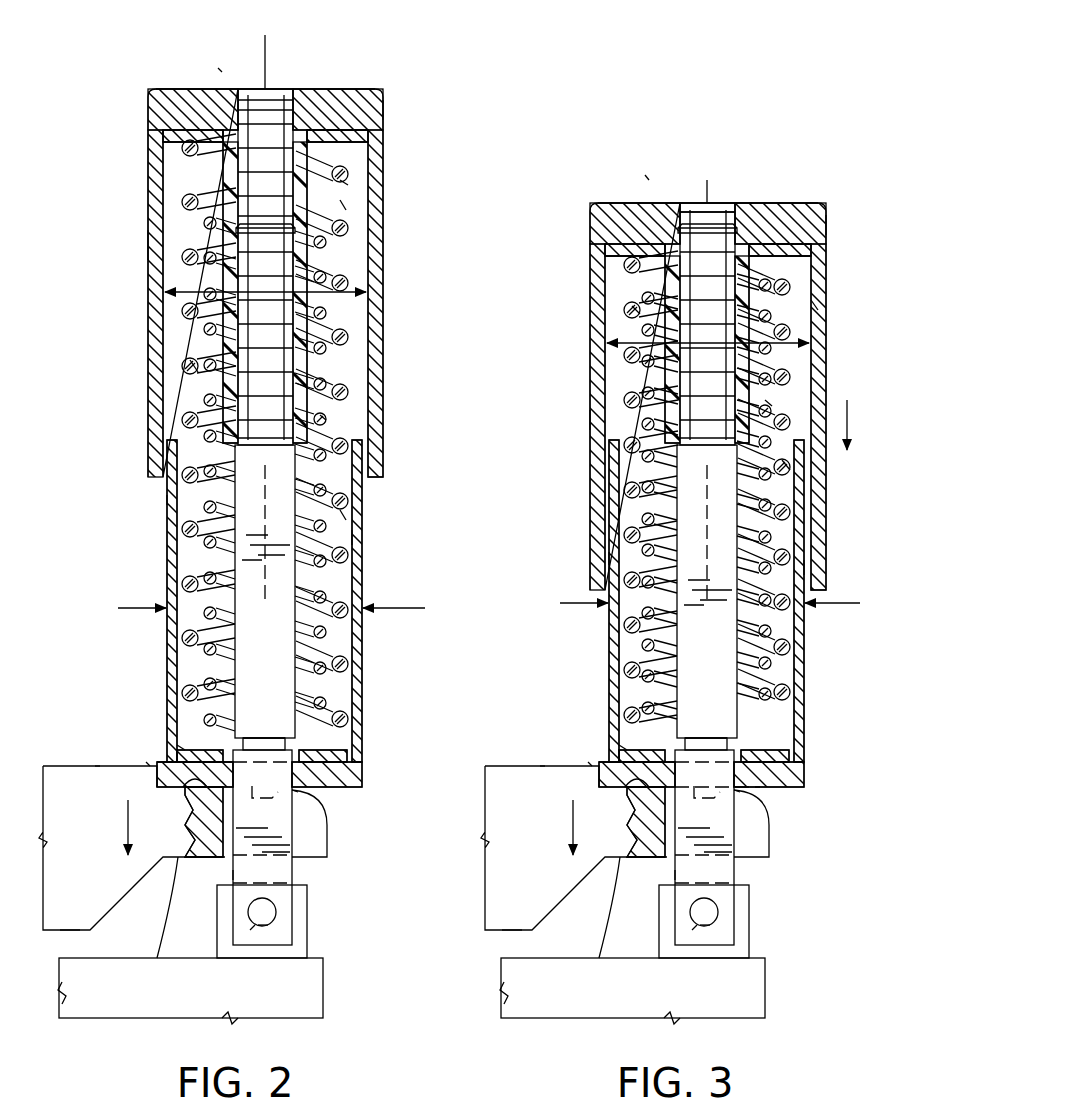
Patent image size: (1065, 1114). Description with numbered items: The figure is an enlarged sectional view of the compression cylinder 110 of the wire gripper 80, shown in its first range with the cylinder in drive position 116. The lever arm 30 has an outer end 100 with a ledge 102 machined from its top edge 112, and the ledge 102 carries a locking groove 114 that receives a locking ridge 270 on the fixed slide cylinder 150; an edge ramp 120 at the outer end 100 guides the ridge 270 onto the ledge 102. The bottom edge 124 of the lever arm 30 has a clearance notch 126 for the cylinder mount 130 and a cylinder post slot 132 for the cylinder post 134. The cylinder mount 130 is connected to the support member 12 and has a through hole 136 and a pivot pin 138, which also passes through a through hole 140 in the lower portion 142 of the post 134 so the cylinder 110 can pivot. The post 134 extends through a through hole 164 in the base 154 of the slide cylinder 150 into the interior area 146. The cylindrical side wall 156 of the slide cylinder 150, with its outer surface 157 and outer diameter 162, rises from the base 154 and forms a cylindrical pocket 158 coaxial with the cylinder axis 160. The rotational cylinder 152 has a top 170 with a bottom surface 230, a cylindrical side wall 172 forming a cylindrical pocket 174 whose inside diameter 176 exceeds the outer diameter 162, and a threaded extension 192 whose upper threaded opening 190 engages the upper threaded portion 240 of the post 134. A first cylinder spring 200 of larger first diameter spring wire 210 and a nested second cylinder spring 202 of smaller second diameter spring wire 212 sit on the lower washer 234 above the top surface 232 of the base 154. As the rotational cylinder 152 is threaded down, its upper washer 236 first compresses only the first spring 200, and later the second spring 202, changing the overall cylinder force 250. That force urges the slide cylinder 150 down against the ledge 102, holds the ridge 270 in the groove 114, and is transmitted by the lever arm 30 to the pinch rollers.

In FIG. 2, the support member 12 is at (308, 986).
In FIG. 3, the support member 12 is at (752, 986).
In FIG. 2, the lever arm 30 is at (62, 764).
In FIG. 3, the lever arm 30 is at (518, 762).
In FIG. 2, the wire gripper 80 is at (90, 613).
In FIG. 3, the wire gripper 80 is at (555, 665).
In FIG. 2, the outer end 100 is at (146, 759).
In FIG. 3, the outer end 100 is at (588, 759).
In FIG. 2, the ledge 102 is at (195, 783).
In FIG. 3, the ledge 102 is at (640, 783).
In FIG. 2, the compression cylinder 110 is at (397, 103).
In FIG. 3, the compression cylinder 110 is at (840, 195).
In FIG. 2, the top edge 112 is at (95, 764).
In FIG. 3, the top edge 112 is at (547, 764).
In FIG. 2, the locking groove 114 is at (257, 773).
In FIG. 3, the locking groove 114 is at (706, 773).
In FIG. 2, the drive position 116 is at (218, 68).
In FIG. 3, the drive position 116 is at (645, 175).
In FIG. 2, the edge ramp 120 is at (298, 792).
In FIG. 3, the edge ramp 120 is at (740, 792).
In FIG. 2, the bottom edge 124 is at (70, 930).
In FIG. 3, the bottom edge 124 is at (520, 930).
In FIG. 2, the clearance notch 126 is at (156, 922).
In FIG. 3, the clearance notch 126 is at (594, 924).
In FIG. 2, the cylinder mount 130 is at (300, 948).
In FIG. 3, the cylinder mount 130 is at (745, 950).
In FIG. 2, the cylinder post slot 132 is at (313, 833).
In FIG. 3, the cylinder post slot 132 is at (760, 840).
In FIG. 2, the cylinder post 134 is at (292, 514).
In FIG. 3, the cylinder post 134 is at (740, 528).
In FIG. 2, the through hole 136 is at (250, 930).
In FIG. 3, the through hole 136 is at (695, 930).
In FIG. 2, the pivot pin 138 is at (263, 907).
In FIG. 3, the pivot pin 138 is at (708, 908).
In FIG. 2, the through hole 140 is at (263, 927).
In FIG. 3, the through hole 140 is at (708, 927).
In FIG. 2, the lower portion 142 is at (283, 863).
In FIG. 3, the lower portion 142 is at (730, 868).
In FIG. 2, the interior area 146 is at (173, 345).
In FIG. 3, the interior area 146 is at (623, 458).
In FIG. 2, the fixed slide cylinder 150 is at (364, 690).
In FIG. 3, the fixed slide cylinder 150 is at (806, 692).
In FIG. 2, the rotational cylinder 152 is at (386, 258).
In FIG. 3, the rotational cylinder 152 is at (829, 347).
In FIG. 2, the base 154 is at (193, 767).
In FIG. 3, the base 154 is at (635, 767).
In FIG. 2, the cylindrical side wall 156 is at (173, 500).
In FIG. 3, the cylindrical side wall 156 is at (803, 567).
In FIG. 2, the outer surface 157 is at (363, 537).
In FIG. 3, the outer surface 157 is at (617, 558).
In FIG. 2, the cylindrical pocket 158 is at (340, 517).
In FIG. 3, the cylindrical pocket 158 is at (623, 512).
In FIG. 2, the cylinder axis 160 is at (270, 60).
In FIG. 3, the cylinder axis 160 is at (712, 195).
In FIG. 2, the outer diameter 162 is at (400, 609).
In FIG. 3, the outer diameter 162 is at (845, 618).
In FIG. 2, the through hole 164 is at (323, 770).
In FIG. 3, the through hole 164 is at (765, 770).
In FIG. 2, the top 170 is at (170, 107).
In FIG. 3, the top 170 is at (610, 232).
In FIG. 2, the cylindrical side wall 172 is at (160, 243).
In FIG. 3, the cylindrical side wall 172 is at (610, 423).
In FIG. 2, the cylindrical pocket 174 is at (177, 167).
In FIG. 3, the cylindrical pocket 174 is at (612, 278).
In FIG. 2, the inside diameter 176 is at (172, 305).
In FIG. 3, the inside diameter 176 is at (625, 375).
In FIG. 2, the upper threaded opening 190 is at (282, 93).
In FIG. 3, the upper threaded opening 190 is at (695, 203).
In FIG. 2, the threaded extension 192 is at (230, 178).
In FIG. 3, the threaded extension 192 is at (668, 335).
In FIG. 2, the first cylinder spring 200 is at (348, 203).
In FIG. 3, the first cylinder spring 200 is at (795, 467).
In FIG. 2, the second cylinder spring 202 is at (336, 418).
In FIG. 3, the second cylinder spring 202 is at (781, 403).
In FIG. 2, the first diameter spring wire 210 is at (185, 363).
In FIG. 3, the first diameter spring wire 210 is at (622, 310).
In FIG. 2, the second diameter spring wire 212 is at (207, 560).
In FIG. 3, the second diameter spring wire 212 is at (617, 482).
In FIG. 2, the bottom surface 230 is at (360, 183).
In FIG. 3, the bottom surface 230 is at (845, 312).
In FIG. 2, the top surface 232 is at (182, 745).
In FIG. 3, the top surface 232 is at (622, 745).
In FIG. 2, the lower washer 234 is at (344, 752).
In FIG. 3, the lower washer 234 is at (786, 752).
In FIG. 2, the upper washer 236 is at (377, 137).
In FIG. 3, the upper washer 236 is at (815, 252).
In FIG. 2, the upper threaded portion 240 is at (283, 370).
In FIG. 3, the upper threaded portion 240 is at (718, 243).
In FIG. 2, the overall cylinder force 250 is at (122, 824).
In FIG. 3, the overall cylinder force 250 is at (565, 825).
In FIG. 2, the locking ridge 270 is at (346, 822).
In FIG. 3, the locking ridge 270 is at (778, 815).